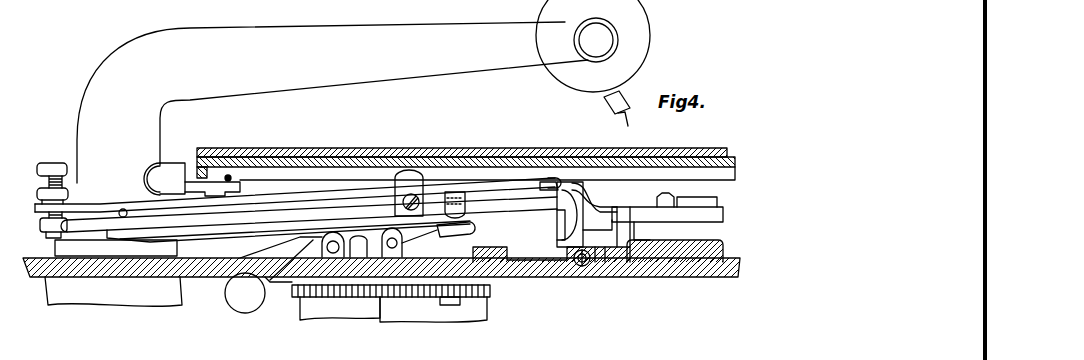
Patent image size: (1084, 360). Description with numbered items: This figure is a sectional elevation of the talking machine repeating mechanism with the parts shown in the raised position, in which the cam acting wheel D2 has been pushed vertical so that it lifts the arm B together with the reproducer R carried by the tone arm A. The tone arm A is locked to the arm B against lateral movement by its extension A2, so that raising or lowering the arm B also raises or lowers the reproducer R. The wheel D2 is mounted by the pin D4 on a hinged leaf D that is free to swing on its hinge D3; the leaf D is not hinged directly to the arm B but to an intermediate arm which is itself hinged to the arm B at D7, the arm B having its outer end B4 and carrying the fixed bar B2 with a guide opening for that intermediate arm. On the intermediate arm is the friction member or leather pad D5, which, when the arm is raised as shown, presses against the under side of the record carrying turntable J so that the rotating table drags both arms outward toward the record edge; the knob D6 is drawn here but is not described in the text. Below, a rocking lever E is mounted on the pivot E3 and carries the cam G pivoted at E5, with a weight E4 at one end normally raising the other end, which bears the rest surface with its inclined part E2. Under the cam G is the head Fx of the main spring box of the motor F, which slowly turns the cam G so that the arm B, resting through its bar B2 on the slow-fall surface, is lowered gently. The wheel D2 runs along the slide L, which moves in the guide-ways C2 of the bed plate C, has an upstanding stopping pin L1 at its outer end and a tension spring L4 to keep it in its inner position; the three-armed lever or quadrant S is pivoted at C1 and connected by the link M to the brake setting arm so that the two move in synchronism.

The tone arm A is at (332, 102).
The extension A2 is at (200, 198).
The reproducer R is at (645, 47).
The record carrying turntable J is at (283, 158).
The rocking lever E is at (362, 233).
The friction member or leather pad D5 is at (408, 170).
The bar B2 is at (455, 192).
The pin D4 is at (498, 180).
The hinge D3 is at (553, 182).
The arm B is at (577, 182).
The hinged leaf D is at (593, 182).
The outer end of arm B B4 is at (623, 182).
The knob D6 is at (47, 164).
The hinge of arm D1 to arm B D7 is at (44, 228).
The inclined part E2 is at (450, 231).
The cam acting wheel D2 is at (558, 227).
The weight E4 is at (226, 292).
The pivot E3 is at (291, 283).
The cam pivot E5 is at (352, 300).
The cam G is at (383, 300).
The motor F is at (432, 310).
The head of the main spring box Fx is at (455, 310).
The bed plate C is at (703, 283).
The pivot of quadrant S C1 is at (490, 250).
The guide-ways C2 is at (613, 249).
The slide L is at (533, 262).
The upstanding stopping pin L1 is at (644, 235).
The tension spring L4 is at (600, 262).
The three-armed lever or quadrant S is at (665, 210).
The link M is at (716, 200).